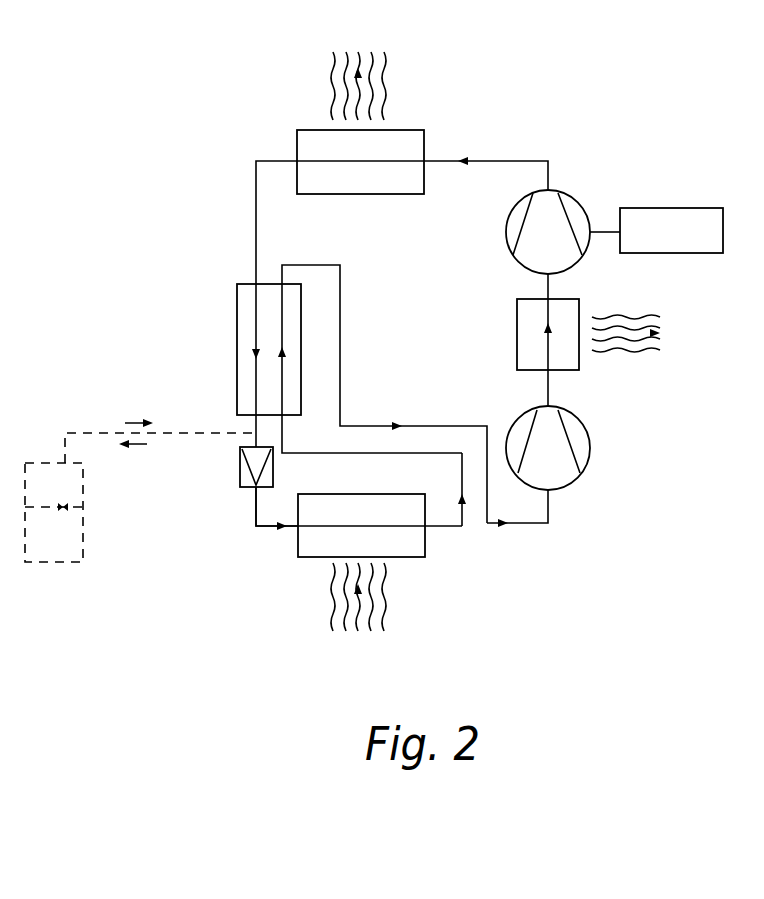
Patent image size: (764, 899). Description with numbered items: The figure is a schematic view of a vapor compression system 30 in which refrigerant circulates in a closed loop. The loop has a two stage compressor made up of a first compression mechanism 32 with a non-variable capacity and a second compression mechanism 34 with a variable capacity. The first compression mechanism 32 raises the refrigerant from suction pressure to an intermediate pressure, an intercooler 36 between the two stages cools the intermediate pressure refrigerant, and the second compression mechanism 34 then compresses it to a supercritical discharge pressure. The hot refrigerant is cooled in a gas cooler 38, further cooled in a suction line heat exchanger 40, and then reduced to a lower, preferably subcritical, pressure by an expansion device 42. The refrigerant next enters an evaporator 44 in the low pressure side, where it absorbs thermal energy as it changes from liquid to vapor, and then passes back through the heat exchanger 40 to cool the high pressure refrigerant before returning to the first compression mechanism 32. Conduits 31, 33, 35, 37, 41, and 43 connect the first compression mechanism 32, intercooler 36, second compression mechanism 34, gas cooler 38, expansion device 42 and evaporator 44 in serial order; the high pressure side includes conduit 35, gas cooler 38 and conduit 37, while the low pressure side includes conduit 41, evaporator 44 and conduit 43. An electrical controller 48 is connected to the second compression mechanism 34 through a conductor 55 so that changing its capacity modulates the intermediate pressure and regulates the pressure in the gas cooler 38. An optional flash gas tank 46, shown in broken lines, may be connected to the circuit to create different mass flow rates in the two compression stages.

The vapor compression system 30 is at (175, 142).
The conduit 31 is at (548, 388).
The first compression mechanism 32 is at (590, 449).
The conduit 33 is at (550, 278).
The second compression mechanism 34 is at (573, 195).
The conduit 35 is at (525, 160).
The intercooler 36 is at (517, 340).
The conduit 37 is at (256, 245).
The gas cooler 38 is at (393, 130).
The suction line heat exchanger 40 is at (237, 340).
The conduit 41 is at (256, 527).
The expansion device 42 is at (240, 482).
The conduit 43 is at (548, 508).
The evaporator 44 is at (425, 541).
The flash gas tank 46 is at (75, 562).
The electrical controller 48 is at (693, 208).
The conductor 55 is at (600, 228).